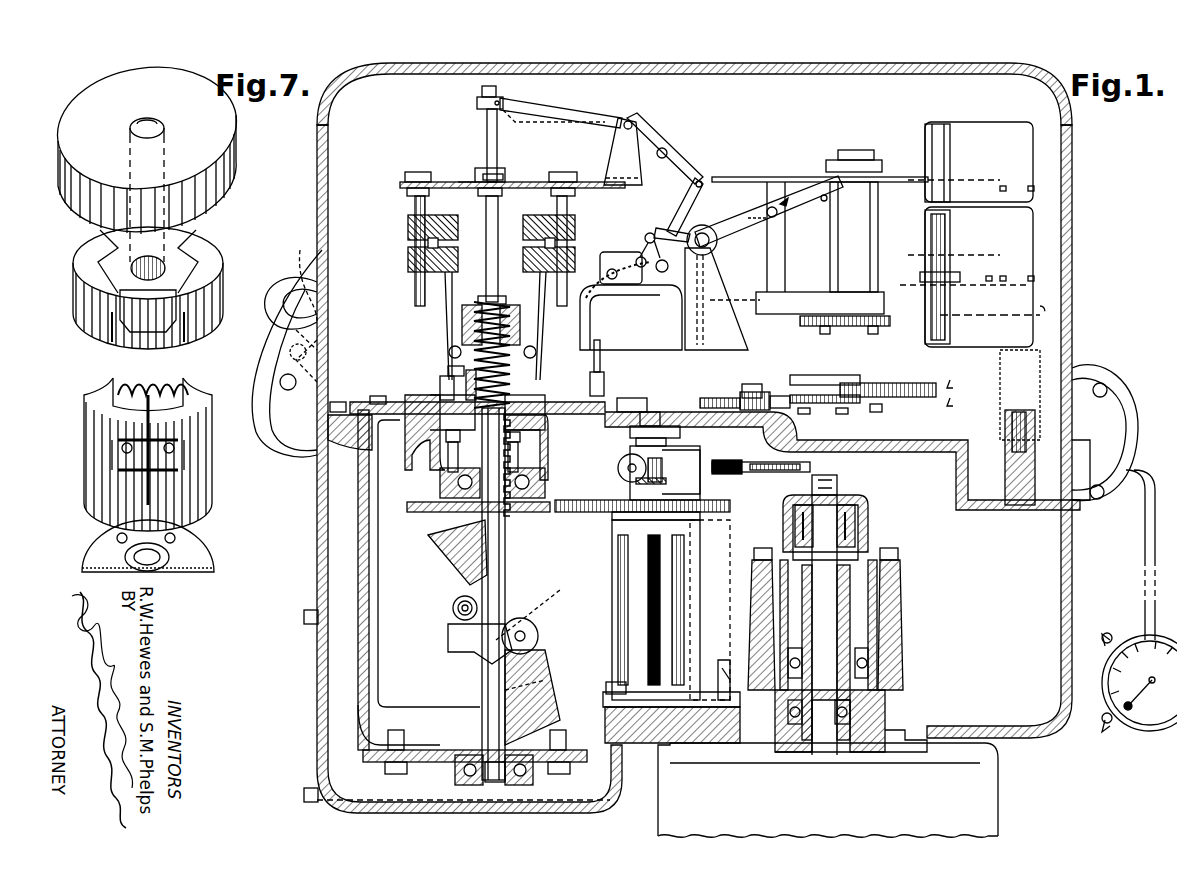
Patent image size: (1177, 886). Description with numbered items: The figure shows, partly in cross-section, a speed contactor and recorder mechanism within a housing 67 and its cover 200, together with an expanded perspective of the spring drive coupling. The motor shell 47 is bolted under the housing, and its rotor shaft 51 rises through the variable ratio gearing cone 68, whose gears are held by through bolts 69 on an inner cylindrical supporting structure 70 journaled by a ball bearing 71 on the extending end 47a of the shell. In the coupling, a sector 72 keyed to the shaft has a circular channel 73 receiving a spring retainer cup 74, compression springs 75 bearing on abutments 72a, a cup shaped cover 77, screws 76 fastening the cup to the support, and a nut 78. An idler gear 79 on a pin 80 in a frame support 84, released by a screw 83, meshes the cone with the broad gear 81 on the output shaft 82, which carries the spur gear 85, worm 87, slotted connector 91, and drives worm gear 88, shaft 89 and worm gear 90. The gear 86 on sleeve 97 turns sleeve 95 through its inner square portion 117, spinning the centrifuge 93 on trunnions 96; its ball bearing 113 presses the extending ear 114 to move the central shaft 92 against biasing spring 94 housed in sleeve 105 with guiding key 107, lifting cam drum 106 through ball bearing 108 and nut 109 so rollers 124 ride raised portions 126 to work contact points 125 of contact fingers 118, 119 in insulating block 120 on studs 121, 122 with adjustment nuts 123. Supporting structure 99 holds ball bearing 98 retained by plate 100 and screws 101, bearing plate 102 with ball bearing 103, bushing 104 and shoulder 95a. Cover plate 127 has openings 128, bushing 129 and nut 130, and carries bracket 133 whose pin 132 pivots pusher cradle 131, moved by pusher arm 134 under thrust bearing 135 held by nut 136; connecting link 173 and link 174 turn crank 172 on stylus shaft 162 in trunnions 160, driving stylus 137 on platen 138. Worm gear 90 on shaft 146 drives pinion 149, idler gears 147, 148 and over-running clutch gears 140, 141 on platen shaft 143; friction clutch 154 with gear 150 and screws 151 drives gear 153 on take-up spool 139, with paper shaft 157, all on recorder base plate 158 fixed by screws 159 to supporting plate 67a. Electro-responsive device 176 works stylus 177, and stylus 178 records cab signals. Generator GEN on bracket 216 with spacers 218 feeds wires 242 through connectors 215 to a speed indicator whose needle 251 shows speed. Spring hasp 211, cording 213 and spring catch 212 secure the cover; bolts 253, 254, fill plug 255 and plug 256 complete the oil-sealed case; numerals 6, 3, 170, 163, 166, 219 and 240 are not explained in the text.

In FIG. 7, the cup shaped cover 77 is at (215, 136).
In FIG. 1, the cup shaped cover 77 is at (862, 507).
In FIG. 7, the sector 72 is at (200, 248).
In FIG. 7, the abutments 72a is at (170, 248).
In FIG. 7, the circular channel 73 is at (176, 336).
In FIG. 7, the compression springs 75 is at (142, 384).
In FIG. 7, the spring retainer cup 74 is at (200, 416).
In FIG. 1, the housing cover 200 is at (1072, 192).
In FIG. 1, the speed contactor and recorder housing 67 is at (1072, 548).
In FIG. 1, the supporting plate 67a is at (320, 476).
In FIG. 1, the spring hasp 211 is at (292, 340).
In FIG. 1, the cording 213 is at (288, 437).
In FIG. 1, the bolts 253 is at (338, 402).
In FIG. 1, the bolts 254 is at (378, 400).
In FIG. 1, the fill plug 255 is at (317, 617).
In FIG. 1, the plug 256 is at (317, 795).
In FIG. 1, the supporting structure 99 is at (420, 441).
In FIG. 1, the nut 136 is at (492, 96).
In FIG. 1, the thrust bearing 135 is at (478, 104).
In FIG. 1, the pusher arm 134 is at (498, 114).
In FIG. 1, the pusher cradle 131 is at (578, 114).
In FIG. 1, the pin 132 is at (629, 122).
In FIG. 1, the bracket 133 is at (618, 156).
In FIG. 1, the connecting link 173 is at (668, 164).
In FIG. 1, the link 174 is at (682, 210).
In FIG. 1, the crank 172 is at (680, 232).
In FIG. 1, the stylus shaft 162 is at (706, 228).
In FIG. 1, the lever 170 is at (646, 238).
In FIG. 1, the bushing 129 is at (498, 174).
In FIG. 1, the nut 130 is at (502, 180).
In FIG. 1, the openings 128 is at (446, 182).
In FIG. 1, the cover plate 127 is at (404, 186).
In FIG. 1, the stud 121 is at (415, 175).
In FIG. 1, the stud 122 is at (568, 196).
In FIG. 1, the adjustment nuts 123 is at (412, 215).
In FIG. 1, the block of insulating material 120 is at (406, 232).
In FIG. 1, the central shaft 92 is at (497, 212).
In FIG. 1, the sleeve 97 is at (511, 432).
In FIG. 1, the nut 109 is at (482, 300).
In FIG. 1, the ball bearing 108 is at (512, 304).
In FIG. 1, the contact fingers 118 is at (440, 326).
In FIG. 1, the contact fingers 119 is at (442, 337).
In FIG. 1, the contact points 125 is at (450, 348).
In FIG. 1, the raised portions 126 is at (456, 366).
In FIG. 1, the rollers 124 is at (464, 372).
In FIG. 1, the cam drum 106 is at (470, 380).
In FIG. 1, the sleeve 105 is at (468, 407).
In FIG. 1, the screws 101 is at (470, 425).
In FIG. 1, the guiding key 107 is at (525, 402).
In FIG. 1, the biasing spring 94 is at (518, 414).
In FIG. 1, the ball bearing 98 is at (458, 478).
In FIG. 1, the plate 100 is at (535, 490).
In FIG. 1, the sleeve 95 is at (507, 576).
In FIG. 1, the gear 86 is at (549, 514).
In FIG. 1, the wedge 6 is at (450, 516).
In FIG. 1, the ball bearing 113 is at (453, 608).
In FIG. 1, the extending ear 114 is at (458, 630).
In FIG. 1, the inner square portion 117 is at (520, 620).
In FIG. 1, the trunnions 96 is at (522, 640).
In FIG. 1, the centrifuge 93 is at (525, 690).
In FIG. 1, the bearing plate 102 is at (475, 755).
In FIG. 1, the shoulder 95a is at (465, 778).
In FIG. 1, the bushing 104 is at (502, 781).
In FIG. 1, the ball bearing 103 is at (535, 778).
In FIG. 1, the spacers 218 is at (590, 398).
In FIG. 1, the bracket 216 is at (622, 400).
In FIG. 1, the plate 219 is at (652, 424).
In FIG. 1, the slotted connector 91 is at (642, 434).
In FIG. 1, the worm gear 88 is at (628, 452).
In FIG. 1, the shaft 89 is at (624, 466).
In FIG. 1, the output shaft 82 is at (634, 480).
In FIG. 1, the worm 87 is at (662, 466).
In FIG. 1, the worm gear 90 is at (796, 470).
In FIG. 1, the spur gear 85 is at (606, 514).
In FIG. 1, the broad gear 81 is at (620, 612).
In FIG. 1, the screw 83 is at (612, 682).
In FIG. 1, the frame support 84 is at (700, 700).
In FIG. 1, the pin 80 is at (730, 672).
In FIG. 1, the nut 78 is at (836, 486).
In FIG. 1, the screws 76 is at (852, 532).
In FIG. 1, the through bolts 69 is at (762, 558).
In FIG. 1, the idler gear 79 is at (758, 570).
In FIG. 1, the variable ratio gearing cone 68 is at (898, 604).
In FIG. 1, the rotor shaft 51 is at (834, 752).
In FIG. 1, the inner cylindrical supporting structure 70 is at (880, 658).
In FIG. 1, the ball bearing 71 is at (880, 682).
In FIG. 1, the extending end of the motor shell 47a is at (880, 700).
In FIG. 1, the motor shell 47 is at (997, 785).
In FIG. 1, the trunnions 160 is at (720, 276).
In FIG. 1, the shaft 157 is at (724, 299).
In FIG. 1, the platen 138 is at (786, 246).
In FIG. 1, the take-up spool 139 is at (898, 176).
In FIG. 1, the stylus 137 is at (856, 190).
In FIG. 1, the pin 163 is at (830, 202).
In FIG. 1, the arrow 166 is at (792, 208).
In FIG. 1, the friction clutch 154 is at (830, 316).
In FIG. 1, the gear 150 is at (844, 327).
In FIG. 1, the screws 151 is at (870, 334).
In FIG. 1, the gear 153 is at (886, 338).
In FIG. 1, the two-position electro-responsive device 176 is at (986, 128).
In FIG. 1, the stylus 177 is at (938, 172).
In FIG. 1, the stylus 178 is at (953, 277).
In FIG. 1, the section line 3 is at (998, 317).
In FIG. 1, the screws 159 is at (1024, 360).
In FIG. 1, the recorder base plate 158 is at (986, 412).
In FIG. 1, the idler gear 148 is at (903, 407).
In FIG. 1, the over-running clutch gear 140 is at (826, 382).
In FIG. 1, the shaft 146 is at (742, 376).
In FIG. 1, the pinion 149 is at (726, 404).
In FIG. 1, the idler gear 147 is at (812, 424).
In FIG. 1, the platen shaft 143 is at (852, 424).
In FIG. 1, the over-running clutch gear 141 is at (886, 422).
In FIG. 1, the direct current generator GEN is at (594, 266).
In FIG. 1, the wires 242 is at (592, 312).
In FIG. 1, the spring catch 212 is at (1118, 418).
In FIG. 1, the quickly detachable connectors 215 is at (1130, 474).
In FIG. 1, the tube 240 is at (1148, 520).
In FIG. 1, the indicator needle 251 is at (1141, 712).